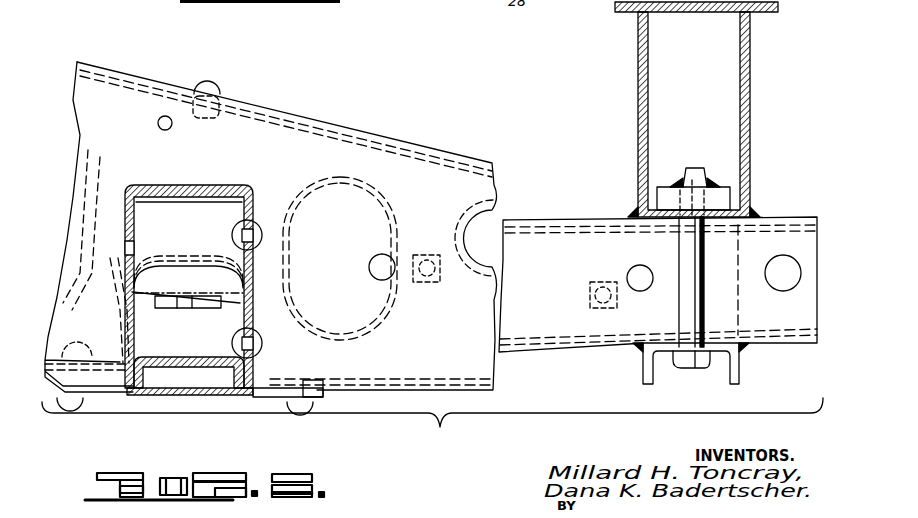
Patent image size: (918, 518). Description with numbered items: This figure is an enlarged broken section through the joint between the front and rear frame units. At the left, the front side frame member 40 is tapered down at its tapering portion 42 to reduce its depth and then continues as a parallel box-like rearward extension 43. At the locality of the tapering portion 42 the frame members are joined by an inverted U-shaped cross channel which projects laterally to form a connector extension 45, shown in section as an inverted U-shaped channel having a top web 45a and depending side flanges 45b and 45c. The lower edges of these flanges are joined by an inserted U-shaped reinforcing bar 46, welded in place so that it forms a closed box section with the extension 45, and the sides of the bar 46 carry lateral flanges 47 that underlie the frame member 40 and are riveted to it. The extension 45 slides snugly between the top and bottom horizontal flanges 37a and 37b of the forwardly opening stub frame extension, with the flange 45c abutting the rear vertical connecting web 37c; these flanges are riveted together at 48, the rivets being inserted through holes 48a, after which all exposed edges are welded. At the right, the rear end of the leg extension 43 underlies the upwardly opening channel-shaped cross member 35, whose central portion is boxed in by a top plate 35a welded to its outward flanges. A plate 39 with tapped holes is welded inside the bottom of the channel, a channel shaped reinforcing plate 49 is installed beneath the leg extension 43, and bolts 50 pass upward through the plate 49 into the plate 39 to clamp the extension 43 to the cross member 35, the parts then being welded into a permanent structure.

The side frame member 40 is at (87, 62).
The tapering portion 42 is at (353, 133).
The connector extension 45 is at (121, 204).
The top web 45a is at (185, 203).
The side flange 45b is at (135, 265).
The side flange 45c is at (235, 260).
The top horizontal flange 37a is at (205, 185).
The bottom horizontal flange 37b is at (195, 396).
The rear vertical connecting web 37c is at (256, 287).
The rivets 48 is at (251, 222).
The holes 48a is at (125, 250).
The U-shaped reinforcing bar 46 is at (174, 357).
The lateral flanges 47 is at (107, 397).
The cross member 35 is at (750, 110).
The top plate 35a is at (698, 12).
The plate 39 is at (730, 195).
The rearward extension 43 is at (545, 219).
The channel shaped reinforcing plate 49 is at (740, 368).
The bolts 50 is at (704, 307).